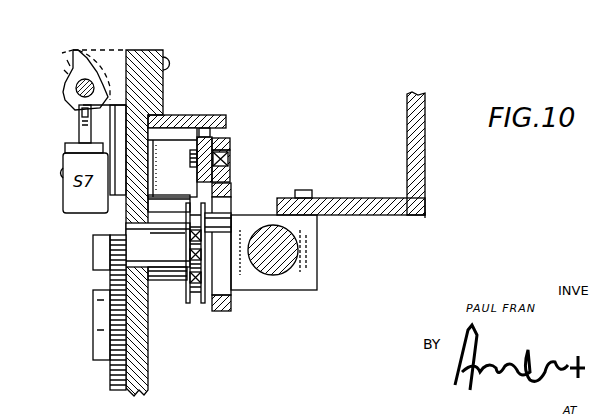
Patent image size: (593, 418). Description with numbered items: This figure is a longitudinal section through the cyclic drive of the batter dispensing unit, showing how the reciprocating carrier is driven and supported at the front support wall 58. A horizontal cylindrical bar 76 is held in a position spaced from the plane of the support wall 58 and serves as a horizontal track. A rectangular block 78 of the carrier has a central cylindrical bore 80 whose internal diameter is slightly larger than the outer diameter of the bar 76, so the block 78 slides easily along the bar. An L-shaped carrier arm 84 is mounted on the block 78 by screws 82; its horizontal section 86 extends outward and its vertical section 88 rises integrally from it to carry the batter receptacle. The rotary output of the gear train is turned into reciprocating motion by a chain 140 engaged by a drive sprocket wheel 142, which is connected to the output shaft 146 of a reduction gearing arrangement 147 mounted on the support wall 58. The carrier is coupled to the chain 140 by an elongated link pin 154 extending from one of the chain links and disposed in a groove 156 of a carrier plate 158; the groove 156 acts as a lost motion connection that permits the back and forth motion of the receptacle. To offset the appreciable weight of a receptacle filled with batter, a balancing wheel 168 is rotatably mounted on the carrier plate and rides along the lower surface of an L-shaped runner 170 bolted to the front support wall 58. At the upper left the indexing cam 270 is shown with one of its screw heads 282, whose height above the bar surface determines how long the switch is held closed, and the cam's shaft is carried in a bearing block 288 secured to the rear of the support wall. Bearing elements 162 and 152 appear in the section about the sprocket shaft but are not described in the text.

The front support wall 58 is at (140, 50).
The runner 170 is at (229, 117).
The bearing block 288 is at (113, 52).
The screw head 282 is at (51, 59).
The indexing cam 270 is at (62, 88).
The chain 140 is at (185, 208).
The drive sprocket wheel 142 is at (193, 262).
The output shaft 146 is at (175, 280).
The reduction gearing arrangement 147 is at (110, 282).
The bearing plate 162 is at (193, 205).
The bearing plate 152 is at (195, 305).
The balancing wheel 168 is at (203, 132).
The carrier plate 158 is at (229, 138).
The groove 156 is at (233, 180).
The elongated link pin 154 is at (220, 222).
The rectangular block 78 is at (317, 270).
The horizontal cylindrical bar 76 is at (287, 271).
The cylindrical bore 80 is at (295, 265).
The horizontal section 86 is at (373, 216).
The screw 82 is at (309, 191).
The vertical section 88 is at (423, 134).
The L-shaped carrier arm 84 is at (423, 218).